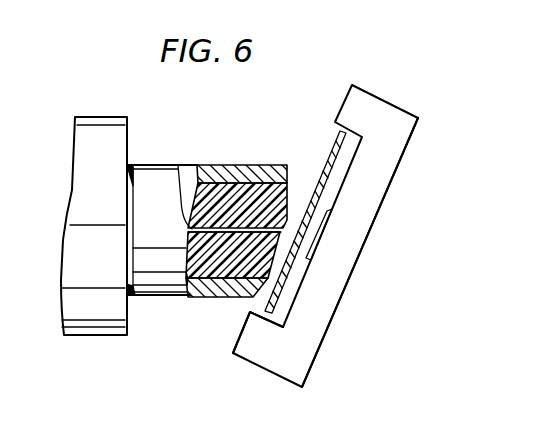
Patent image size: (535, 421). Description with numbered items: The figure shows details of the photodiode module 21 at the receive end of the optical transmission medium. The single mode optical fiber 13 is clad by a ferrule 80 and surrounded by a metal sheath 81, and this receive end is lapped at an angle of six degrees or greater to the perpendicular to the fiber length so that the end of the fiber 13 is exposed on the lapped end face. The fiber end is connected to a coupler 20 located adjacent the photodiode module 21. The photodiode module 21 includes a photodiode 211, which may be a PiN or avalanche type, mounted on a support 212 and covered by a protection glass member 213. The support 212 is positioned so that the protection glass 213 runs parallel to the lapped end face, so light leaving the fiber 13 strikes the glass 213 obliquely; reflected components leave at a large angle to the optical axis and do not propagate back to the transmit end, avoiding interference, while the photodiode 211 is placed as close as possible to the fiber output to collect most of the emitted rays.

The coupler 20 is at (110, 117).
The photodiode module 21 is at (412, 79).
The single mode optical fiber 13 is at (178, 165).
The metal sheath 81 is at (237, 165).
The ferrule 80 is at (287, 198).
The support 212 is at (385, 182).
The photodiode 211 is at (318, 236).
The protection glass member 213 is at (273, 297).